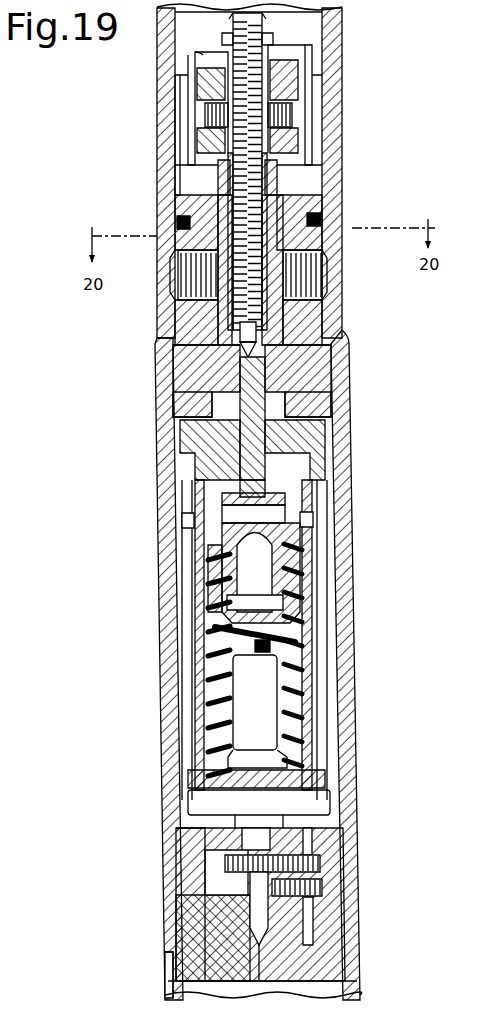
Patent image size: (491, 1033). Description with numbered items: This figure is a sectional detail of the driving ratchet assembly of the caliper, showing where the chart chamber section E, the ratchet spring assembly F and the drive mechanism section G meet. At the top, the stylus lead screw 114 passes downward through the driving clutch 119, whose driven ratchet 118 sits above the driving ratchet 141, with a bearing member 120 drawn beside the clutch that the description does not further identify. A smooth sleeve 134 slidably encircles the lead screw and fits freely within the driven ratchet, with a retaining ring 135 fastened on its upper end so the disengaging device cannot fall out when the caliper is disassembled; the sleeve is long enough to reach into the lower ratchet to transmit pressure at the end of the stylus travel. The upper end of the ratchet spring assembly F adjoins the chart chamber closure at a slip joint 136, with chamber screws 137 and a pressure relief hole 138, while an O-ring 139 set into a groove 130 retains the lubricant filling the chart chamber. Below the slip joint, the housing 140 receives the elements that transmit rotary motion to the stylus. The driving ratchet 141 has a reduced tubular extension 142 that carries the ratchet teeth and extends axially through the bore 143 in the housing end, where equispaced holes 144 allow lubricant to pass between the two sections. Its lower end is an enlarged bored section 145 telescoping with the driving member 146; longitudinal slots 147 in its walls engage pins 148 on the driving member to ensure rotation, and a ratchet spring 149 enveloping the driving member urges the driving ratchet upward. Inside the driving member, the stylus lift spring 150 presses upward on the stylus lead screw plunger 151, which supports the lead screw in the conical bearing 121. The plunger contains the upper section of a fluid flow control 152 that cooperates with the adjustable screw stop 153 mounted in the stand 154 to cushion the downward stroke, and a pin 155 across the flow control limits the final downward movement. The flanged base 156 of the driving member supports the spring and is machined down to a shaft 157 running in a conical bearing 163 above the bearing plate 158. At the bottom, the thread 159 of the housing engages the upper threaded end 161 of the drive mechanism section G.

The chart chamber section E is at (155, 127).
The drive mechanism section G is at (162, 982).
The ratchet spring assembly F is at (358, 478).
The stylus lead screw 114 is at (340, 132).
The driven ratchet 118 is at (343, 175).
The driving clutch 119 is at (353, 192).
The thrust bearing 120 is at (344, 75).
The conical bearing 121 is at (210, 350).
The groove 130 is at (178, 224).
The sleeve 134 is at (268, 56).
The retaining ring 135 is at (268, 43).
The slip joint 136 is at (345, 312).
The chamber screws 137 is at (345, 272).
The pressure relief hole 138 is at (343, 240).
The O-ring 139 is at (343, 215).
The housing 140 is at (352, 432).
The driving ratchet 141 is at (325, 460).
The reduced tubular extension 142 is at (270, 380).
The bore 143 is at (342, 332).
The equispaced holes 144 is at (180, 390).
The enlarged bored section 145 is at (200, 468).
The driving member 146 is at (300, 572).
The longitudinal slots 147 is at (325, 540).
The pins 148 is at (312, 520).
The ratchet spring 149 is at (300, 645).
The stylus lift spring 150 is at (310, 672).
The stylus lead screw plunger 151 is at (258, 418).
The fluid flow control 152 is at (190, 520).
The adjustable screw stop 153 is at (255, 645).
The stand 154 is at (240, 712).
The pin 155 is at (228, 602).
The flanged base 156 is at (325, 795).
The shaft 157 is at (330, 830).
The bearing plate 158 is at (320, 860).
The thread 159 is at (345, 920).
The upper threaded end 161 is at (190, 885).
The conical bearing 163 is at (258, 932).